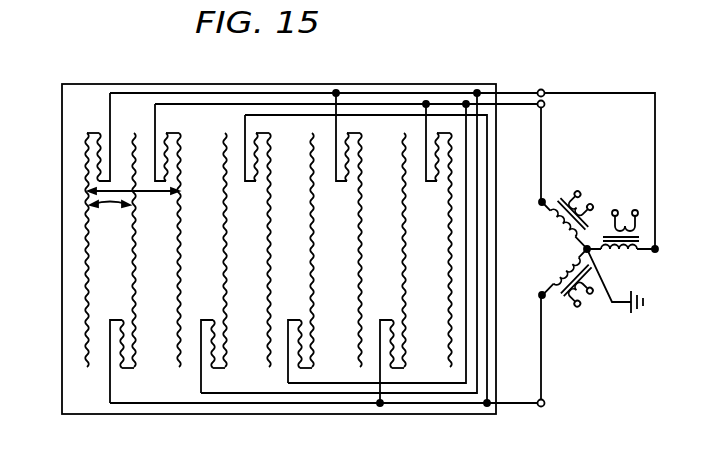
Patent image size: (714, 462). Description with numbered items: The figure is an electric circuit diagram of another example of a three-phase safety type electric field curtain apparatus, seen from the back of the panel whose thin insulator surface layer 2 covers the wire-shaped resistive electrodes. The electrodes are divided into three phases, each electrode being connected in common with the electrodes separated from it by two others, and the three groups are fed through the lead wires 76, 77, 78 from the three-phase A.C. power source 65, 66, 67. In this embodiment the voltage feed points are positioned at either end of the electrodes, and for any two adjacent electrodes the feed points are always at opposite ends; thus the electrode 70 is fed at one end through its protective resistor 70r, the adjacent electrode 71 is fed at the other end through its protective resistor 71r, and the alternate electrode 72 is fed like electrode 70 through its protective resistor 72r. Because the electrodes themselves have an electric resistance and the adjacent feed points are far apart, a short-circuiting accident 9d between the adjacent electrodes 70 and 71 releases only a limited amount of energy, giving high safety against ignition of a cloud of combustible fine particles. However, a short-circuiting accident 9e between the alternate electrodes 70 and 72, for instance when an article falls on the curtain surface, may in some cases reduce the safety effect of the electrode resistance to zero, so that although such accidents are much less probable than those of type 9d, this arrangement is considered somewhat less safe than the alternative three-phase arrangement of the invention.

The thin insulator surface layer 2 is at (82, 390).
The short-circuiting accident between adjacent electrodes 9d is at (108, 204).
The short-circuiting accident between alternate electrodes 9e is at (100, 190).
The three-phase A.C. power source 65 is at (562, 240).
The three-phase A.C. power source 66 is at (563, 268).
The three-phase A.C. power source 67 is at (646, 252).
The electrode 70 is at (85, 330).
The protective resistor 70r is at (101, 140).
The electrode 71 is at (133, 347).
The protective resistor 71r is at (120, 355).
The electrode 72 is at (181, 335).
The protective resistor 72r is at (163, 142).
The lead wire 76 is at (243, 93).
The lead wire 77 is at (383, 104).
The lead wire 78 is at (294, 114).